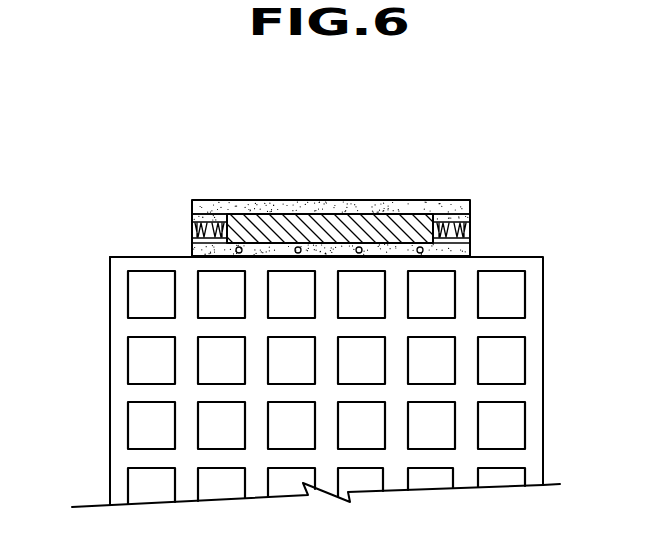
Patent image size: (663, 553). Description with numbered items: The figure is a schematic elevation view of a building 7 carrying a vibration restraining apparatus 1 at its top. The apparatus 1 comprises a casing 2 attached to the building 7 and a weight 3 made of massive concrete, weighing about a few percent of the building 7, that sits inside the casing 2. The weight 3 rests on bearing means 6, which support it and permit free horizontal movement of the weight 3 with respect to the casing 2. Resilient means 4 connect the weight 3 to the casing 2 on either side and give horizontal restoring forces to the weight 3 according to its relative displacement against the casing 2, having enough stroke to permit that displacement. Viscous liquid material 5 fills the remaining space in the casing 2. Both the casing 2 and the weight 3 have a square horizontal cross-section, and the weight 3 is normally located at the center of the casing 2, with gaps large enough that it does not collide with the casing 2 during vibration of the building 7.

The apparatus 1 is at (123, 170).
The casing 2 is at (452, 200).
The weight 3 is at (387, 220).
The resilient means 4 is at (205, 222).
The viscous liquid material 5 is at (262, 208).
The bearing means 6 is at (294, 254).
The building 7 is at (118, 447).